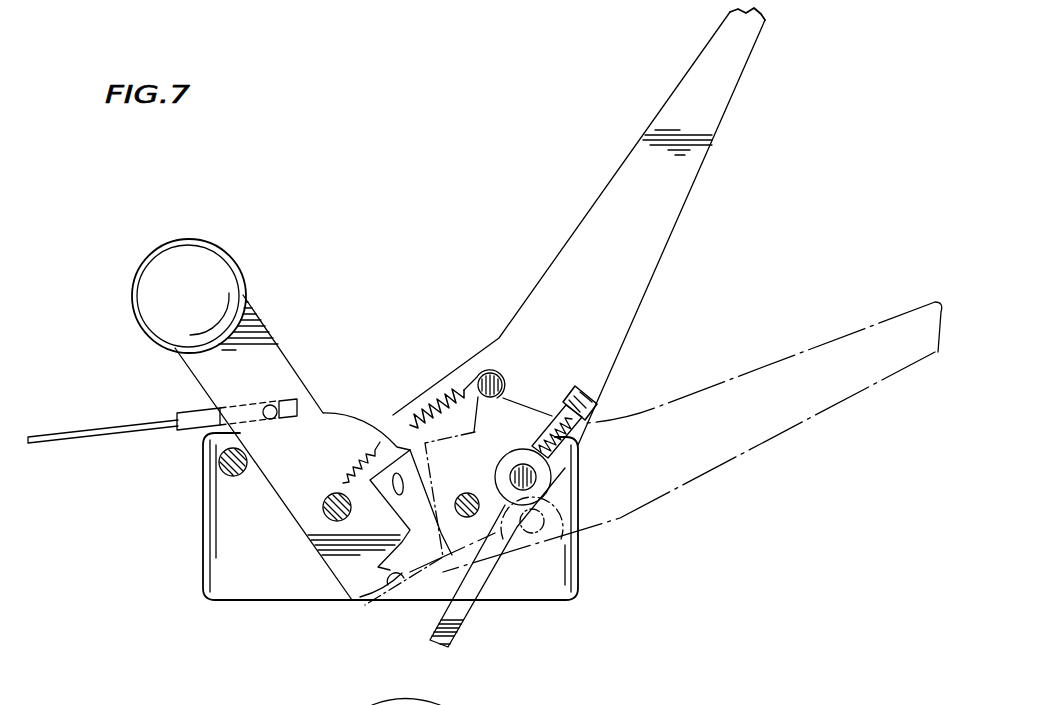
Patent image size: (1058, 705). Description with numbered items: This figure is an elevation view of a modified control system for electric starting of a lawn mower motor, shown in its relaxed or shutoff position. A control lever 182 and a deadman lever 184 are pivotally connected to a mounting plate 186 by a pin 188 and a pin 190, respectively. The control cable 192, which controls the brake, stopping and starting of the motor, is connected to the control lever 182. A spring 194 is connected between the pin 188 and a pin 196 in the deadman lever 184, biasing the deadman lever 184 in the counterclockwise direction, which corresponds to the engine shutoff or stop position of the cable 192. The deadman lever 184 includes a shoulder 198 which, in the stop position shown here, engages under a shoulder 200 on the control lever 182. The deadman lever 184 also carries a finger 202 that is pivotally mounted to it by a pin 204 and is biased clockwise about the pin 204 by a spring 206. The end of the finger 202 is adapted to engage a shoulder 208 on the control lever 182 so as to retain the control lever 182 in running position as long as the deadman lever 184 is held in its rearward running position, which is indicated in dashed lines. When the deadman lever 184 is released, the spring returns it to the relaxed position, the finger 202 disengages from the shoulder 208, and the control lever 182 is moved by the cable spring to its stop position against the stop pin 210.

The control lever 182 is at (258, 321).
The deadman lever 184 is at (660, 258).
The mounting plate 186 is at (203, 588).
The pin 188 is at (323, 513).
The pin 190 is at (438, 505).
The control cable 192 is at (85, 423).
The spring 194 is at (445, 388).
The pin 196 is at (497, 372).
The shoulder 198 is at (413, 445).
The shoulder 200 is at (407, 452).
The finger 202 is at (460, 620).
The pin 204 is at (537, 477).
The spring 206 is at (587, 433).
The shoulder 208 is at (457, 517).
The stop pin 210 is at (219, 463).